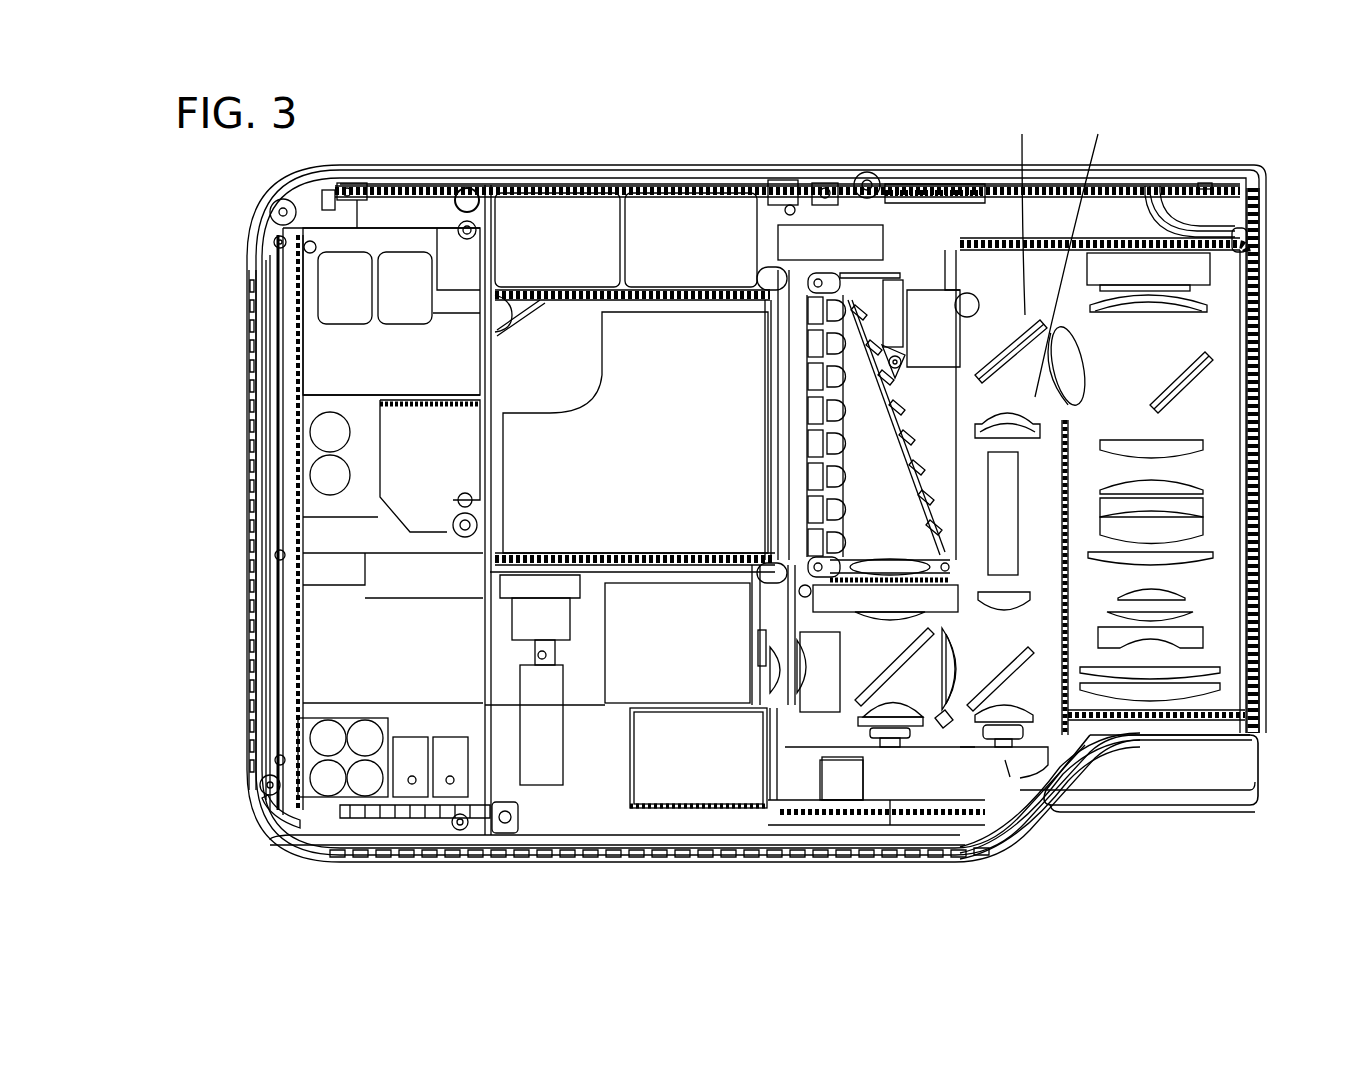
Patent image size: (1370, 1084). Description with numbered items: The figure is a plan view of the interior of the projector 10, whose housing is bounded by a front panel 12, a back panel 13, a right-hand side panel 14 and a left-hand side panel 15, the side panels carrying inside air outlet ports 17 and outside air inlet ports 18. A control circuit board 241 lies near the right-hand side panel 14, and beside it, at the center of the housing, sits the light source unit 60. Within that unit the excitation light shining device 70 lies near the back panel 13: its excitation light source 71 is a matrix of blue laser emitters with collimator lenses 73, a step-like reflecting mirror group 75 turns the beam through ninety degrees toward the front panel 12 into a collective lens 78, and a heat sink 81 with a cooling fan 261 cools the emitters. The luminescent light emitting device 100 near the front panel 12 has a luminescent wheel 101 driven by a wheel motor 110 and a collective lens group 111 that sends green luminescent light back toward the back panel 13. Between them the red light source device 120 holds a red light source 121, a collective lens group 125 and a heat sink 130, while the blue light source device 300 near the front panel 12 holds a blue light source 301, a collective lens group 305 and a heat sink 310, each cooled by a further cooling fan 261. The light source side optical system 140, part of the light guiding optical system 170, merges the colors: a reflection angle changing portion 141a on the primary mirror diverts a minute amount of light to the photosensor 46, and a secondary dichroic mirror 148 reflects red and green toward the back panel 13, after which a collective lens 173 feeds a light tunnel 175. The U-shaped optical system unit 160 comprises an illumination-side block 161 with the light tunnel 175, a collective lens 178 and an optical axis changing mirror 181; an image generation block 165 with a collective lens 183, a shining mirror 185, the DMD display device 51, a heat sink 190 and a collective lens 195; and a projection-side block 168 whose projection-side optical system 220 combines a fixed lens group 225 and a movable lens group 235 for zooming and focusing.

The projector 10 is at (1278, 153).
The front panel 12 is at (404, 860).
The back panel 13 is at (620, 192).
The right-hand side panel 14 is at (260, 372).
The left-hand side panel 15 is at (1262, 665).
The inside air outlet ports 17 is at (258, 417).
The outside air inlet ports 18 is at (572, 168).
The photosensor 46 is at (1005, 760).
The display device 51 is at (1240, 255).
The light source unit 60 is at (745, 479).
The excitation light shining device 70 is at (794, 300).
The excitation light source 71 is at (808, 410).
The collimator lenses 73 is at (803, 380).
The reflecting mirror group 75 is at (880, 440).
The collective lens 78 is at (882, 562).
The heat sink 81 is at (670, 395).
The luminescent light emitting device 100 is at (865, 810).
The luminescent wheel 101 is at (765, 815).
The wheel motor 110 is at (830, 800).
The collective lens group 111 is at (965, 765).
The red light source device 120 is at (685, 765).
The red light source 121 is at (748, 665).
The collective lens group 125 is at (748, 600).
The heat sink 130 is at (640, 649).
The light source side optical system 140 is at (1135, 722).
The reflection angle changing portion 141a is at (897, 670).
The secondary dichroic mirror 148 is at (963, 705).
The optical system unit 160 is at (1190, 722).
The illumination-side block 161 is at (1035, 397).
The image generation block 165 is at (1200, 330).
The projection-side block 168 is at (1215, 497).
The light guiding optical system 170 is at (1025, 315).
The collective lens 173 is at (1020, 600).
The light tunnel 175 is at (1010, 560).
The collective lens 178 is at (1010, 413).
The optical axis changing mirror 181 is at (1000, 350).
The collective lens 183 is at (1085, 340).
The shining mirror 185 is at (1180, 378).
The heat sink 190 is at (1115, 210).
The collective lens 195 is at (1205, 283).
The projection-side optical system 220 is at (1215, 527).
The fixed lens group 225 is at (1240, 795).
The movable lens group 235 is at (1215, 470).
The control circuit board 241 is at (365, 598).
The cooling fan 261 is at (515, 240).
The blue light source device 300 is at (1010, 790).
The blue light source 301 is at (1080, 805).
The collective lens group 305 is at (1020, 690).
The heat sink 310 is at (900, 778).